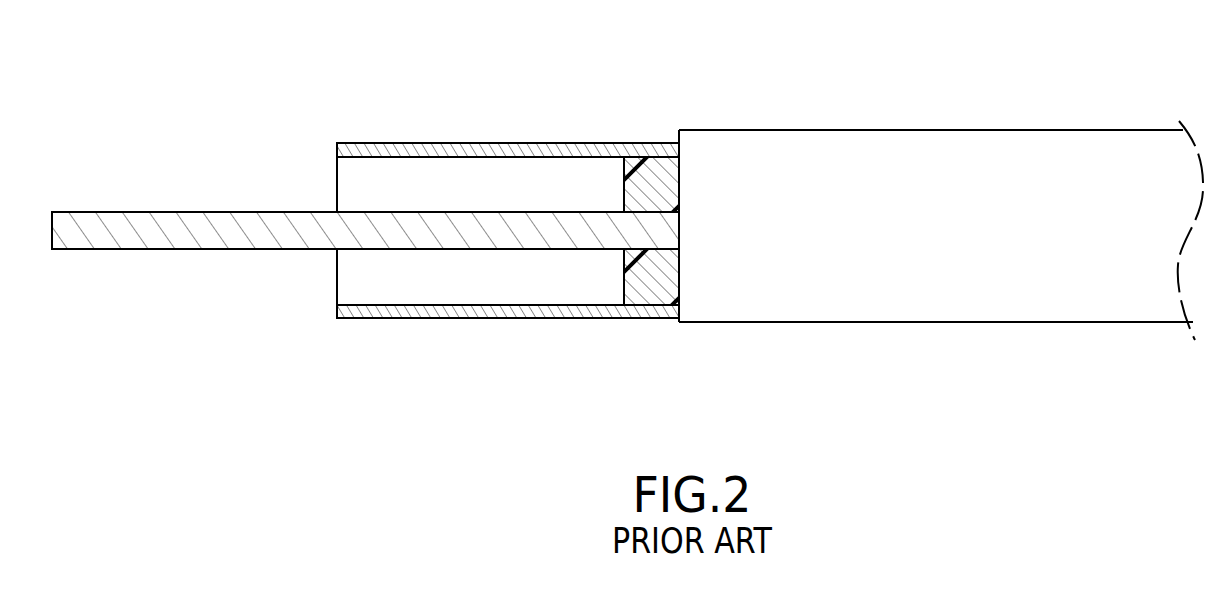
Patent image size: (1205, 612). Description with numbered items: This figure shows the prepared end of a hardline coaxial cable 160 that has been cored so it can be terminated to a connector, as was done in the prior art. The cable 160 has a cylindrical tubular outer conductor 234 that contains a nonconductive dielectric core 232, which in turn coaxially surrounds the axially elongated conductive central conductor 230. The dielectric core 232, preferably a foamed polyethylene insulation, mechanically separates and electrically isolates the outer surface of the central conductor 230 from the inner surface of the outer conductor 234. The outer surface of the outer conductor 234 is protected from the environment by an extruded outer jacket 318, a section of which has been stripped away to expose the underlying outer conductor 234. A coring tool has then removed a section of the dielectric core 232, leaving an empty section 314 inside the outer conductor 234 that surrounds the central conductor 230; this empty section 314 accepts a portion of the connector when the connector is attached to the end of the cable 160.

The coaxial cable 160 is at (933, 103).
The outer jacket 318 is at (915, 297).
The central conductor 230 is at (108, 240).
The outer conductor 234 is at (415, 312).
The dielectric core 232 is at (623, 282).
The empty section 314 is at (380, 187).